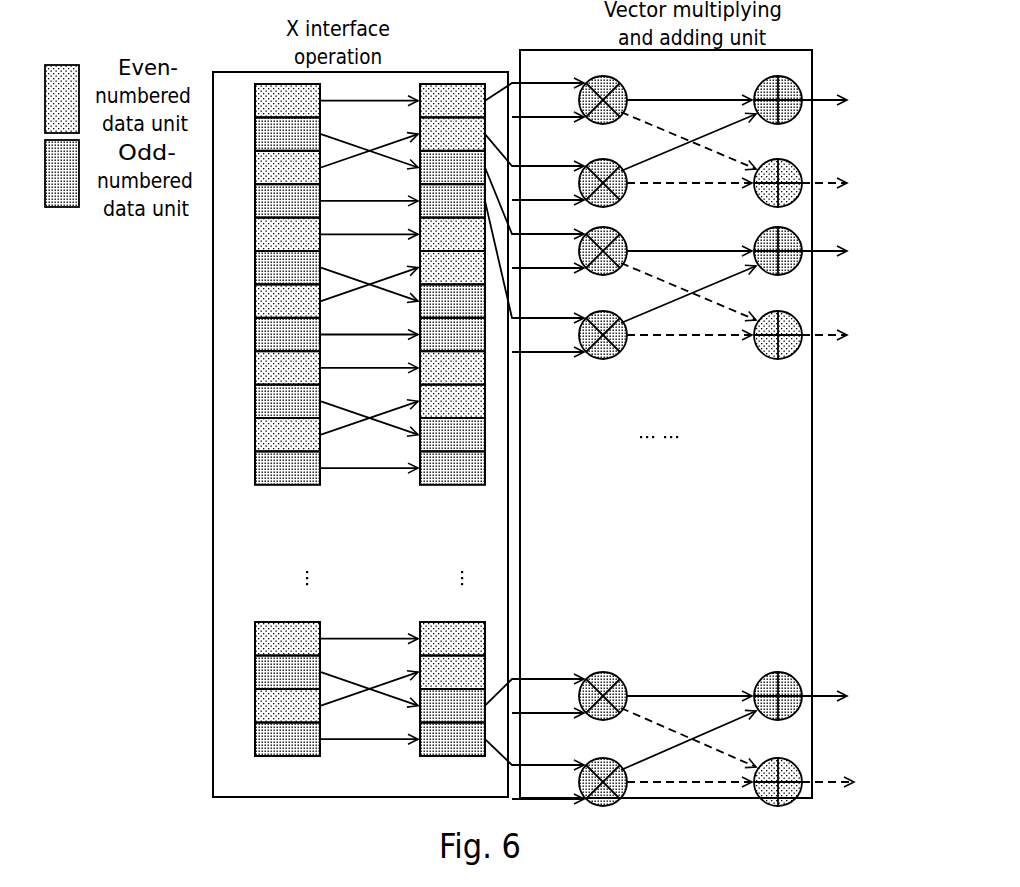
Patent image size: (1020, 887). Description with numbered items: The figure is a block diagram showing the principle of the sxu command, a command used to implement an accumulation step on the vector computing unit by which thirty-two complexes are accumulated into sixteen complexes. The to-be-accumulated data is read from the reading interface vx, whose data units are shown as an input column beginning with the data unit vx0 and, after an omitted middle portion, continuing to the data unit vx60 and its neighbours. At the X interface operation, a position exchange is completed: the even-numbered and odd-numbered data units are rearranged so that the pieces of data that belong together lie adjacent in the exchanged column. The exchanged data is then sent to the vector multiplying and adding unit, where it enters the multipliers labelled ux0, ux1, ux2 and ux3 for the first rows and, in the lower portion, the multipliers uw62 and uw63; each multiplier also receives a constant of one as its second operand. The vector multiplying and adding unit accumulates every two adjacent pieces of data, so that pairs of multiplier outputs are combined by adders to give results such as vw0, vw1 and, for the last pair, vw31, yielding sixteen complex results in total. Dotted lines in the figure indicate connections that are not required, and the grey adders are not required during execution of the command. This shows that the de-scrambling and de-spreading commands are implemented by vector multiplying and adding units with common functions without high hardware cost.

The even/odd-numbered data units vx0-vx3 of the X input vector vx0 is at (273, 284).
The data units vx60-vx63 of the X input vector vx60 is at (274, 678).
The multiplier for interleaved data unit ux0 is at (584, 86).
The multiplier for interleaved data unit ux1 is at (584, 172).
The multiplier for interleaved data unit ux2 is at (584, 238).
The multiplier for interleaved data unit ux3 is at (584, 323).
The multiplier for interleaved data unit uw62 is at (578, 687).
The multiplier for interleaved data unit uw63 is at (578, 769).
The adder output vw0 is at (813, 95).
The adder output vw1 is at (827, 251).
The adder output vw31 is at (820, 691).